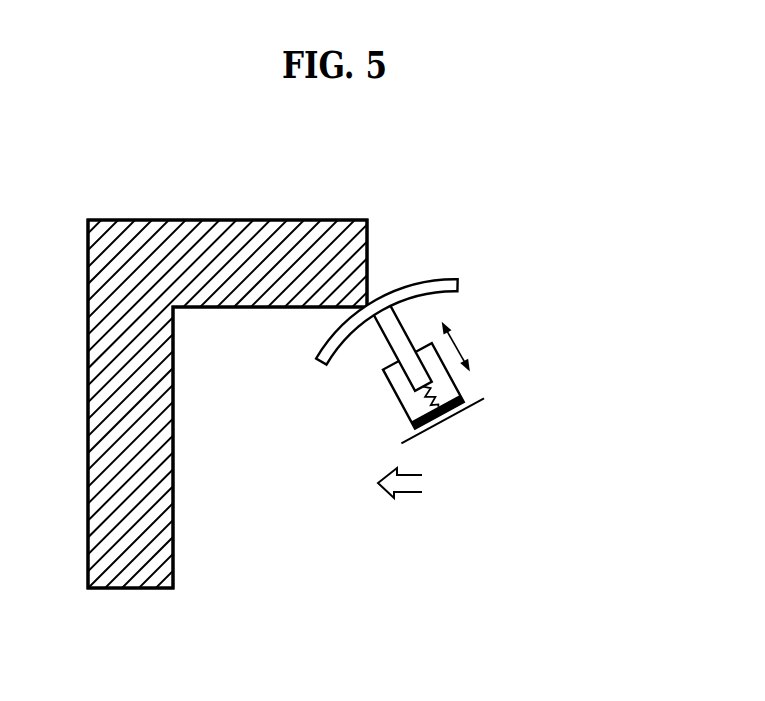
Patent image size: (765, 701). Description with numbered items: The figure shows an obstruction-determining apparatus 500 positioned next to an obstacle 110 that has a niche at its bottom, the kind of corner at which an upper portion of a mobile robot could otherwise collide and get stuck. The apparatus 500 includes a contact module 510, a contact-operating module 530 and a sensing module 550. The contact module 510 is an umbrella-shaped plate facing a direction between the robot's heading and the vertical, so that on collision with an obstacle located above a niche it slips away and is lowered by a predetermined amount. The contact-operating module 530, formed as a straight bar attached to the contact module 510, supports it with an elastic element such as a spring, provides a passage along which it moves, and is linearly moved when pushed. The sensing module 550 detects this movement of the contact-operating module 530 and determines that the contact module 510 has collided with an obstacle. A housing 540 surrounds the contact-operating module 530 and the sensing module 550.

The obstacle 110 is at (282, 220).
The obstruction-determining apparatus 500 is at (443, 304).
The contact module 510 is at (458, 282).
The contact-operating module 530 is at (427, 360).
The sensor body 540 is at (406, 410).
The sensing module 550 is at (450, 417).